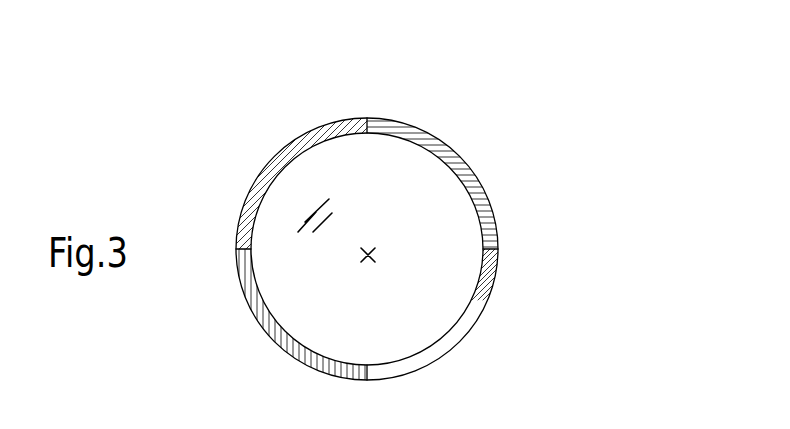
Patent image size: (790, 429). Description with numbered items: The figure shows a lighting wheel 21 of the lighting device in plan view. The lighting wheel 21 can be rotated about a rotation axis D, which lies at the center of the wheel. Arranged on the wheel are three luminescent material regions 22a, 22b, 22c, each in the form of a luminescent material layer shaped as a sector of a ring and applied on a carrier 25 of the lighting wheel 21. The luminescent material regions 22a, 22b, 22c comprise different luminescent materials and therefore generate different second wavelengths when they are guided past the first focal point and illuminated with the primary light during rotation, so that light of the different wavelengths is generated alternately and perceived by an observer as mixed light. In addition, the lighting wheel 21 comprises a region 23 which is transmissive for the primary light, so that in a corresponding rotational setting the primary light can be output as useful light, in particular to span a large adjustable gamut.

The lighting wheel 21 is at (555, 246).
The luminescent material region 22a is at (281, 160).
The luminescent material region 22b is at (439, 148).
The luminescent material region 22c is at (471, 316).
The transmissive region 23 is at (266, 320).
The carrier 25 is at (345, 181).
The rotation axis D is at (366, 245).